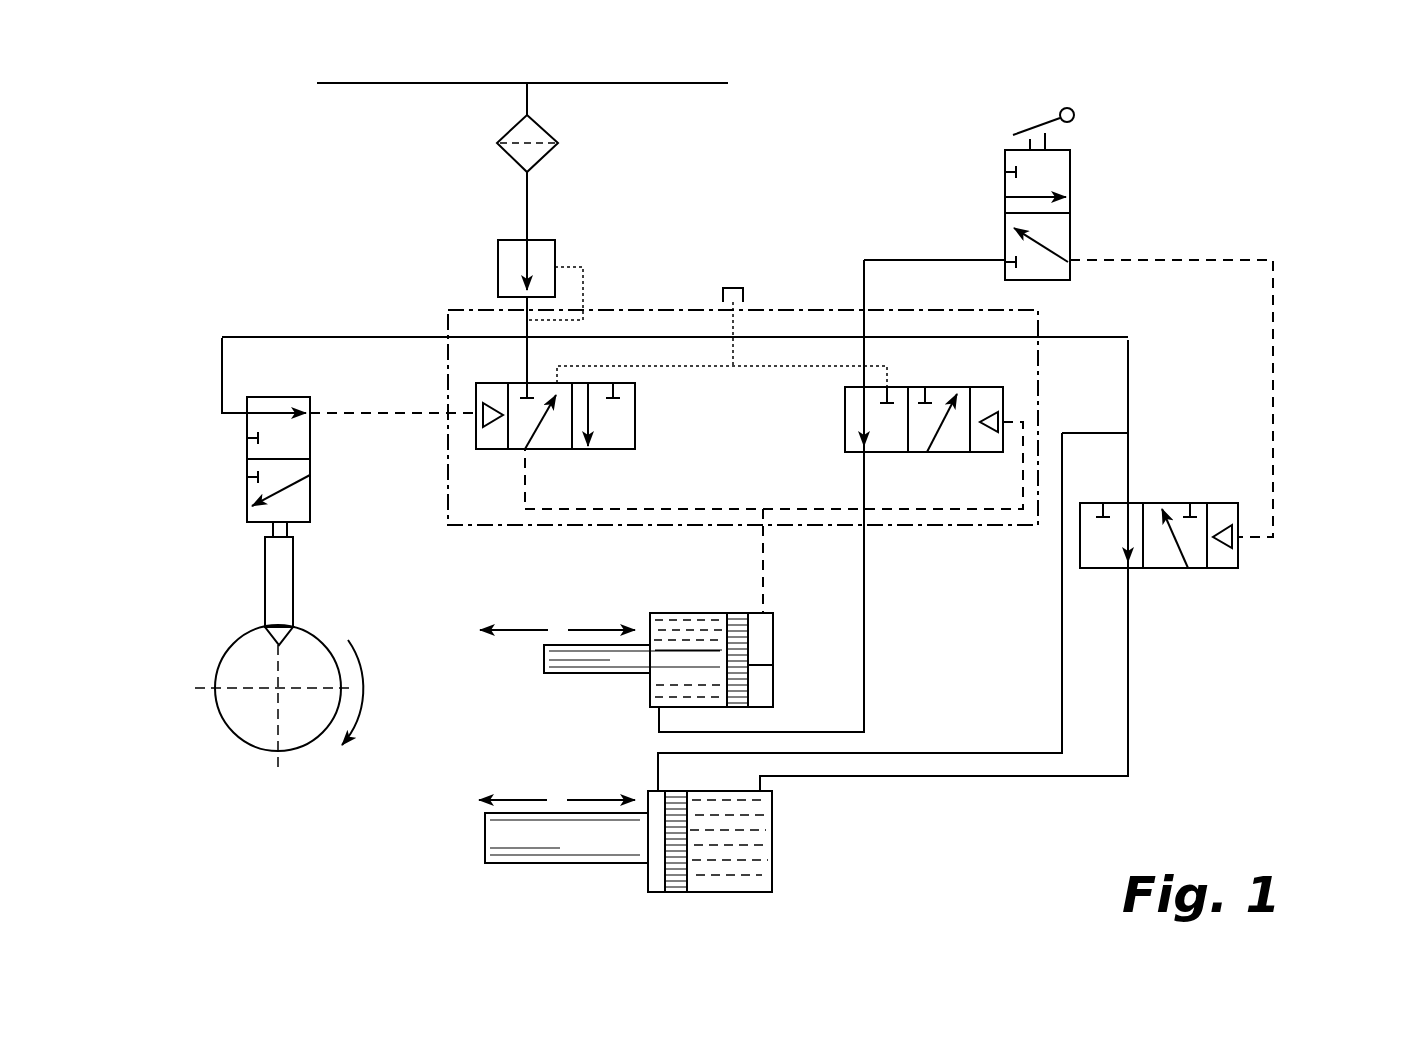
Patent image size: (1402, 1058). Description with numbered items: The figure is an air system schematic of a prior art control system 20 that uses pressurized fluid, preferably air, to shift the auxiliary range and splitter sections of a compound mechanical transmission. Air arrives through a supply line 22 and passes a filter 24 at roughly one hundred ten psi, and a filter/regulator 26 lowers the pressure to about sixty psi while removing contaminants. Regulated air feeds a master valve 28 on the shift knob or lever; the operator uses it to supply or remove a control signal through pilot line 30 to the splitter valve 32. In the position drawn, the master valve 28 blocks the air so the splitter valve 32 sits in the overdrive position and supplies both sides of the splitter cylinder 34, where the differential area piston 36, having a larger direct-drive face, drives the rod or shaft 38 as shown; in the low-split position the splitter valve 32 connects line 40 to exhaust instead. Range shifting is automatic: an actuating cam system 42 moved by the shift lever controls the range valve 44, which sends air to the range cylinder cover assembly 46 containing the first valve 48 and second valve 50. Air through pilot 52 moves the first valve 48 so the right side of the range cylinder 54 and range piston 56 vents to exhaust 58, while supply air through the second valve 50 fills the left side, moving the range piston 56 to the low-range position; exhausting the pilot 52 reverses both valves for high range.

The control system 20 is at (225, 162).
The supply line 22 is at (472, 84).
The filter 24 is at (545, 132).
The filter/regulator 26 is at (498, 265).
The master valve 28 is at (1005, 153).
The pilot line 30 is at (1273, 343).
The splitter valve 32 is at (1209, 590).
The splitter cylinder 34 is at (772, 868).
The differential area piston 36 is at (648, 880).
The rod or shaft 38 is at (542, 864).
The line 40 is at (1058, 778).
The actuating cam system 42 is at (257, 765).
The range valve 44 is at (310, 500).
The range cylinder cover assembly 46 is at (472, 525).
The first valve 48 is at (635, 423).
The second valve 50 is at (845, 422).
The pilot 52 is at (335, 413).
The range cylinder 54 is at (650, 690).
The range piston 56 is at (773, 666).
The exhaust 58 is at (708, 284).